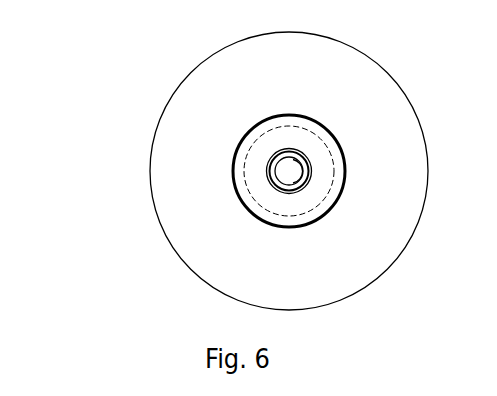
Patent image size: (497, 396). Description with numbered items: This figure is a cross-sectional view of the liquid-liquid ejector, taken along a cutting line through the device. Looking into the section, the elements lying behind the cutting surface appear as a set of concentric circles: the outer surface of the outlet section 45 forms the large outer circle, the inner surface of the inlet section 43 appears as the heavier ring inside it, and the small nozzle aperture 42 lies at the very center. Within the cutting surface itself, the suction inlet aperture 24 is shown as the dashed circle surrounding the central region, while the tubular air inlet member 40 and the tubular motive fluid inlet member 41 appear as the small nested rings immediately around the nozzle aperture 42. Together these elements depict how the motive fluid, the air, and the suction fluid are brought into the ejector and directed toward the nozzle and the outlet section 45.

The outlet section 45 is at (187, 128).
The inlet section 43 is at (239, 165).
The suction inlet aperture 24 is at (252, 187).
The nozzle aperture 42 is at (283, 172).
The tubular air inlet member 40 is at (275, 185).
The tubular motive fluid inlet member 41 is at (275, 193).